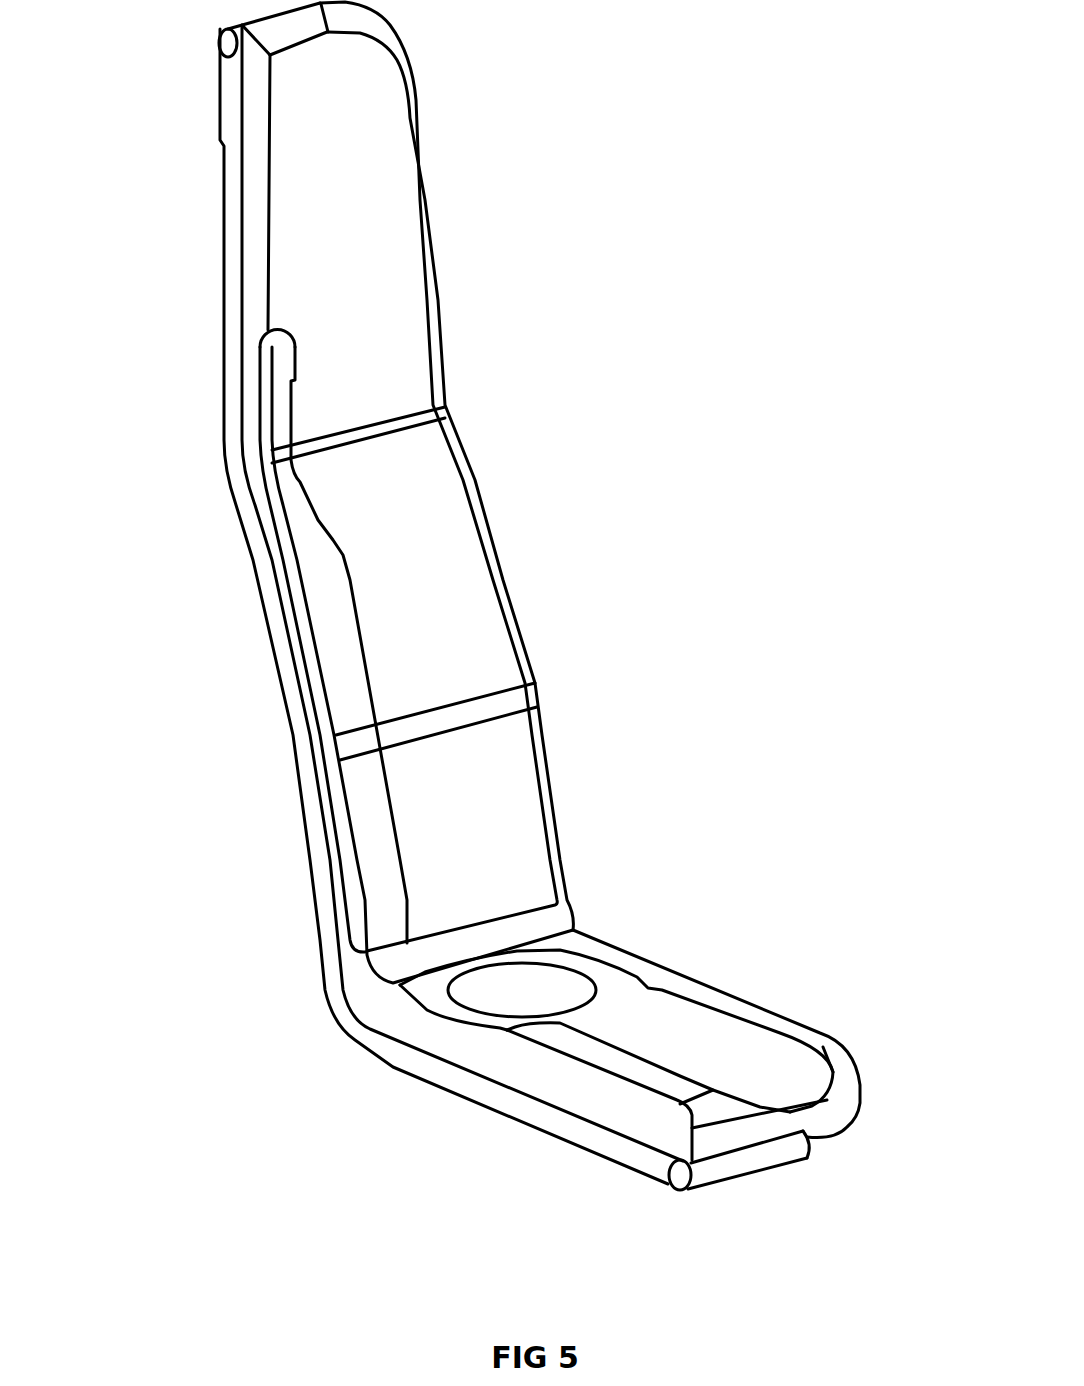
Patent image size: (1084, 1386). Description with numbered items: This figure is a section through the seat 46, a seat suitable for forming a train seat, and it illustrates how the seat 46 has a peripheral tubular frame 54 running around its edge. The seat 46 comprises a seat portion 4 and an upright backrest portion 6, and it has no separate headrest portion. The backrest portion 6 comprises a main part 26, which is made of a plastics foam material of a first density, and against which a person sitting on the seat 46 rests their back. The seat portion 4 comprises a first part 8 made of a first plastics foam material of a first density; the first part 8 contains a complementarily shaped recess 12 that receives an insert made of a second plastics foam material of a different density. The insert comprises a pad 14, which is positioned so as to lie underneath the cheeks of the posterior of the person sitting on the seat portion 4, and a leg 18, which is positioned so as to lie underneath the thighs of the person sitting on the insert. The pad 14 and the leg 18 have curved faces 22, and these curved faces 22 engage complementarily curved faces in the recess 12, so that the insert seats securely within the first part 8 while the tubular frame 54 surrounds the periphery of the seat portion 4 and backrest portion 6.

The peripheral tubular frame 54 is at (220, 45).
The backrest portion 6 is at (484, 467).
The main part 26 is at (454, 577).
The seat 46 is at (729, 677).
The seat portion 4 is at (730, 980).
The first part 8 is at (787, 1018).
The pad 14 is at (498, 996).
The leg 18 is at (648, 1066).
The recess 12 is at (726, 1116).
The curved face 22 is at (827, 1063).